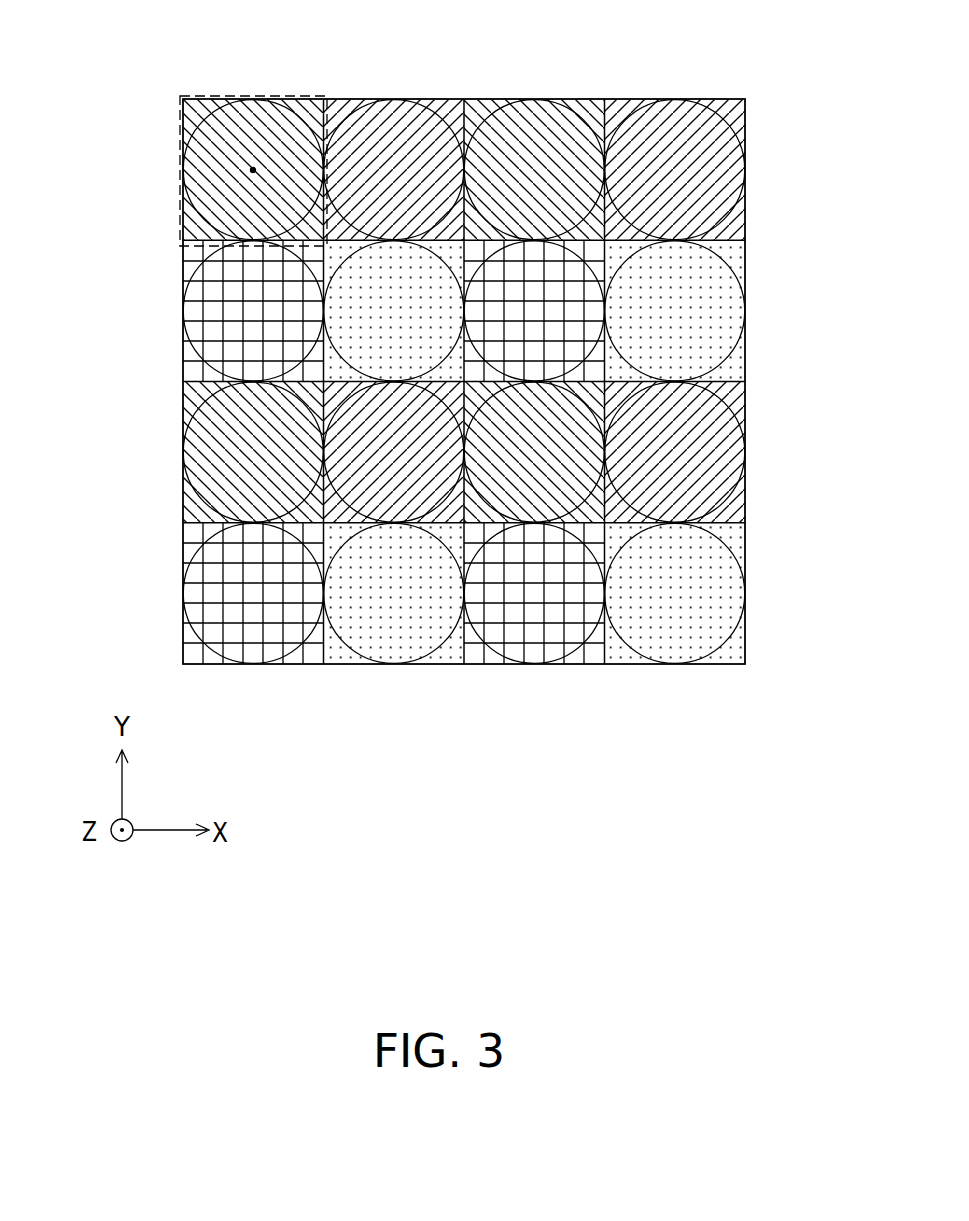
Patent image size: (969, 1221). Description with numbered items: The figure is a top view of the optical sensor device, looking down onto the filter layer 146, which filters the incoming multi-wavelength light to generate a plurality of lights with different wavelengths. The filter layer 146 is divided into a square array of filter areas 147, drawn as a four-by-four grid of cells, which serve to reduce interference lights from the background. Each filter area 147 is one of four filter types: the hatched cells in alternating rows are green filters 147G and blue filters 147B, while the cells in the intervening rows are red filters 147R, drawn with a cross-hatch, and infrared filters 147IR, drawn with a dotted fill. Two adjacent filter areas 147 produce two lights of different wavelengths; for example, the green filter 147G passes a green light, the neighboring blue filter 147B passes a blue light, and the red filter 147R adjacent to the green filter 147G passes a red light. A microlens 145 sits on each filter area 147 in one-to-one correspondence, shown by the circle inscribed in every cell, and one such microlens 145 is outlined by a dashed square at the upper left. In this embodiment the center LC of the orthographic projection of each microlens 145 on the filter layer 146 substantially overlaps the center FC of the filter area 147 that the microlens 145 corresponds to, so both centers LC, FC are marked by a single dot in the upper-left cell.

The microlens 145 is at (218, 96).
The filter layer 146 is at (445, 339).
The filter area 147 is at (193, 131).
The green filter 147G is at (193, 129).
The blue filter 147B is at (453, 99).
The red filter 147R is at (183, 375).
The infrared filter 147IR is at (747, 374).
The center of orthographic projection of microlens LC is at (158, 182).
The center of filter area FC is at (250, 170).